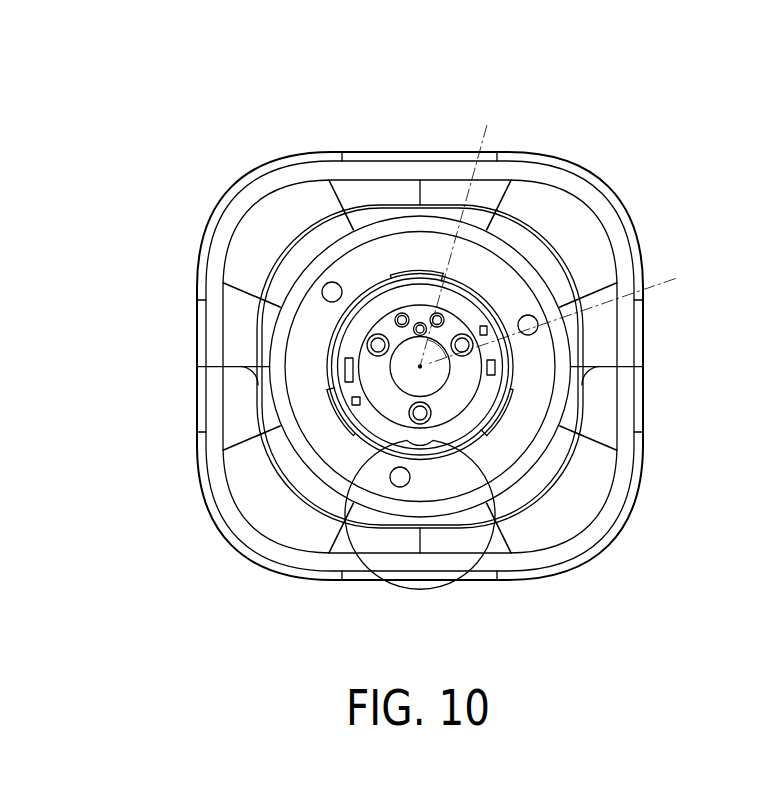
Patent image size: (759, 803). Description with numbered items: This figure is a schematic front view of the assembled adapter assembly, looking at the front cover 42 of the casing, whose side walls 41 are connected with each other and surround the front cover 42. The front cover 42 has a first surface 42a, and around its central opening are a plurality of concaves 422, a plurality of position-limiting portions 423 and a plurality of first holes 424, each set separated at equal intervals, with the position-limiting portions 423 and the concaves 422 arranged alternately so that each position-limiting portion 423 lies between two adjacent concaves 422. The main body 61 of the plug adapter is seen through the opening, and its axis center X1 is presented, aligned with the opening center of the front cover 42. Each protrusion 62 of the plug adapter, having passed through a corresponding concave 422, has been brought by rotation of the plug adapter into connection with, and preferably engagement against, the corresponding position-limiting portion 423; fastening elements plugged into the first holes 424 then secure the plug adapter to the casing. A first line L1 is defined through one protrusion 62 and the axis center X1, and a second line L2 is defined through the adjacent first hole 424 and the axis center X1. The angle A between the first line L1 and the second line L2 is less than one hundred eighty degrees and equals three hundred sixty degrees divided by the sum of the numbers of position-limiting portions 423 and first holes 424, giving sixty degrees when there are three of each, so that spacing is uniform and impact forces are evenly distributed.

The side wall 41 is at (196, 330).
The front cover 42 is at (537, 525).
The first surface 42a is at (372, 263).
The main body 61 is at (332, 283).
The first hole 424 is at (328, 292).
The concave 422 is at (405, 272).
The protrusion 62 is at (436, 272).
The position-limiting portion 423 is at (478, 282).
The first line L1 is at (462, 230).
The second line L2 is at (570, 309).
The axis center X1 is at (405, 378).
The angle A is at (438, 340).